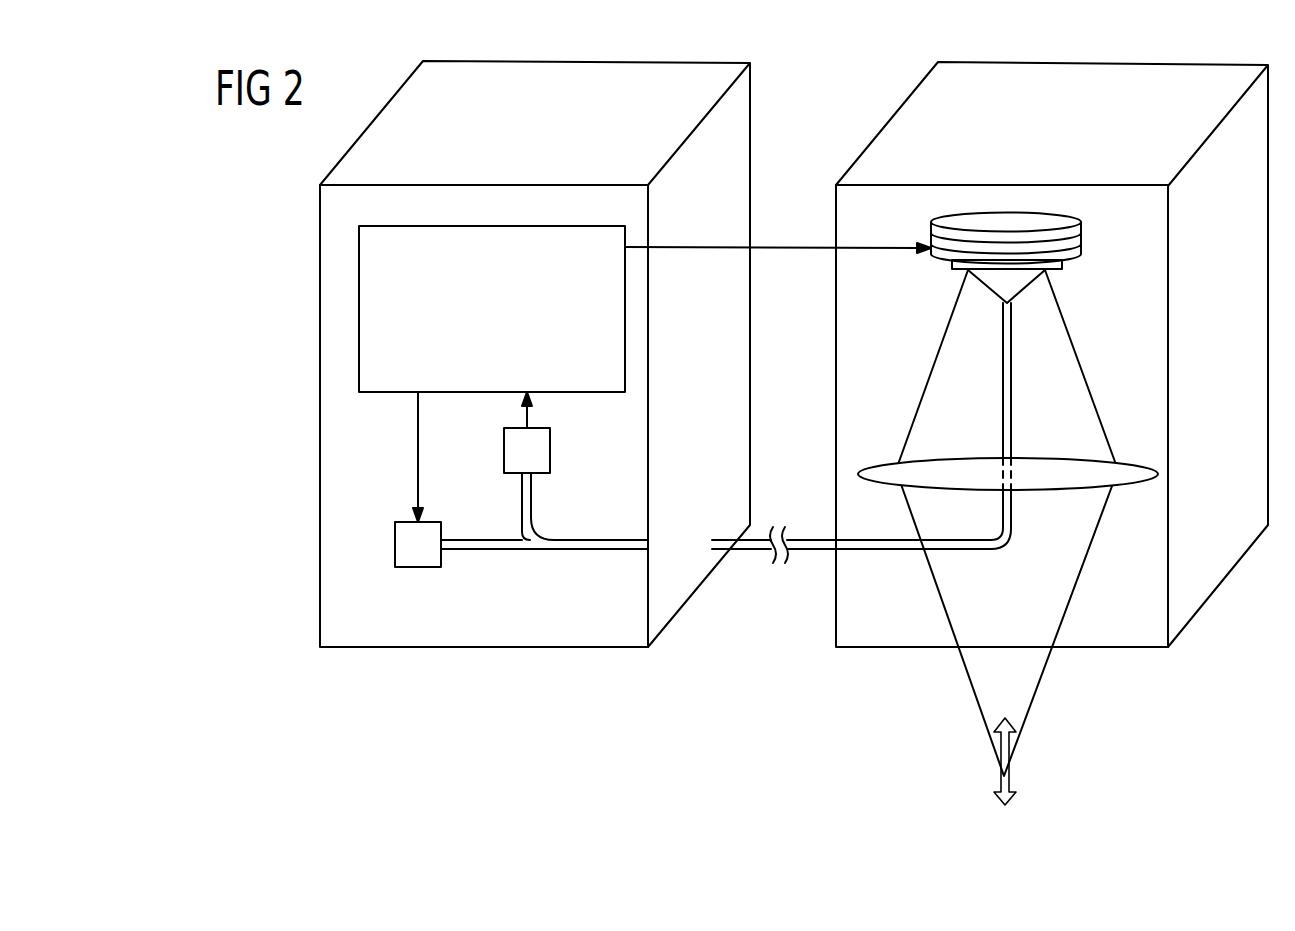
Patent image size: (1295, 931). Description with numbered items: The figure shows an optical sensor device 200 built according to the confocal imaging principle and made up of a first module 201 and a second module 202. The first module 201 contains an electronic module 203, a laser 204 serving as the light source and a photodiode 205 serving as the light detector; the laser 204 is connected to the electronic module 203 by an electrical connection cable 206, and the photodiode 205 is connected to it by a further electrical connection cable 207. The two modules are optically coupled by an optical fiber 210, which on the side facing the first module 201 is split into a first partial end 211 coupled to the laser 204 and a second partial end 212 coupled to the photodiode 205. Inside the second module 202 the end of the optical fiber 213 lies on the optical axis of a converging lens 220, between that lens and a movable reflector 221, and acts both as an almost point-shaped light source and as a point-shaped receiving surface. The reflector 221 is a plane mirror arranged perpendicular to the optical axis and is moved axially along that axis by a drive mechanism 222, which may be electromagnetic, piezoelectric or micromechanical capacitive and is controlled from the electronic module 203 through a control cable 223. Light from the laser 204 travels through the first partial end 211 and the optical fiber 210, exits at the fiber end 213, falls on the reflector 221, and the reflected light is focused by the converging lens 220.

The optical sensor device 200 is at (268, 430).
The first module 201 is at (483, 648).
The second module 202 is at (873, 653).
The electronic module 203 is at (625, 325).
The laser 204 is at (415, 568).
The photodiode 205 is at (550, 448).
The electrical connection cable 206 is at (418, 430).
The electrical connection cable 207 is at (530, 410).
The optical fiber 210 is at (593, 549).
The first partial end 211 is at (512, 549).
The second partial end 212 is at (533, 497).
The end of the optical fiber 213 is at (1002, 304).
The converging lens 220 is at (1040, 457).
The movable reflector 221 is at (1062, 267).
The drive mechanism 222 is at (1018, 217).
The control cable 223 is at (800, 248).